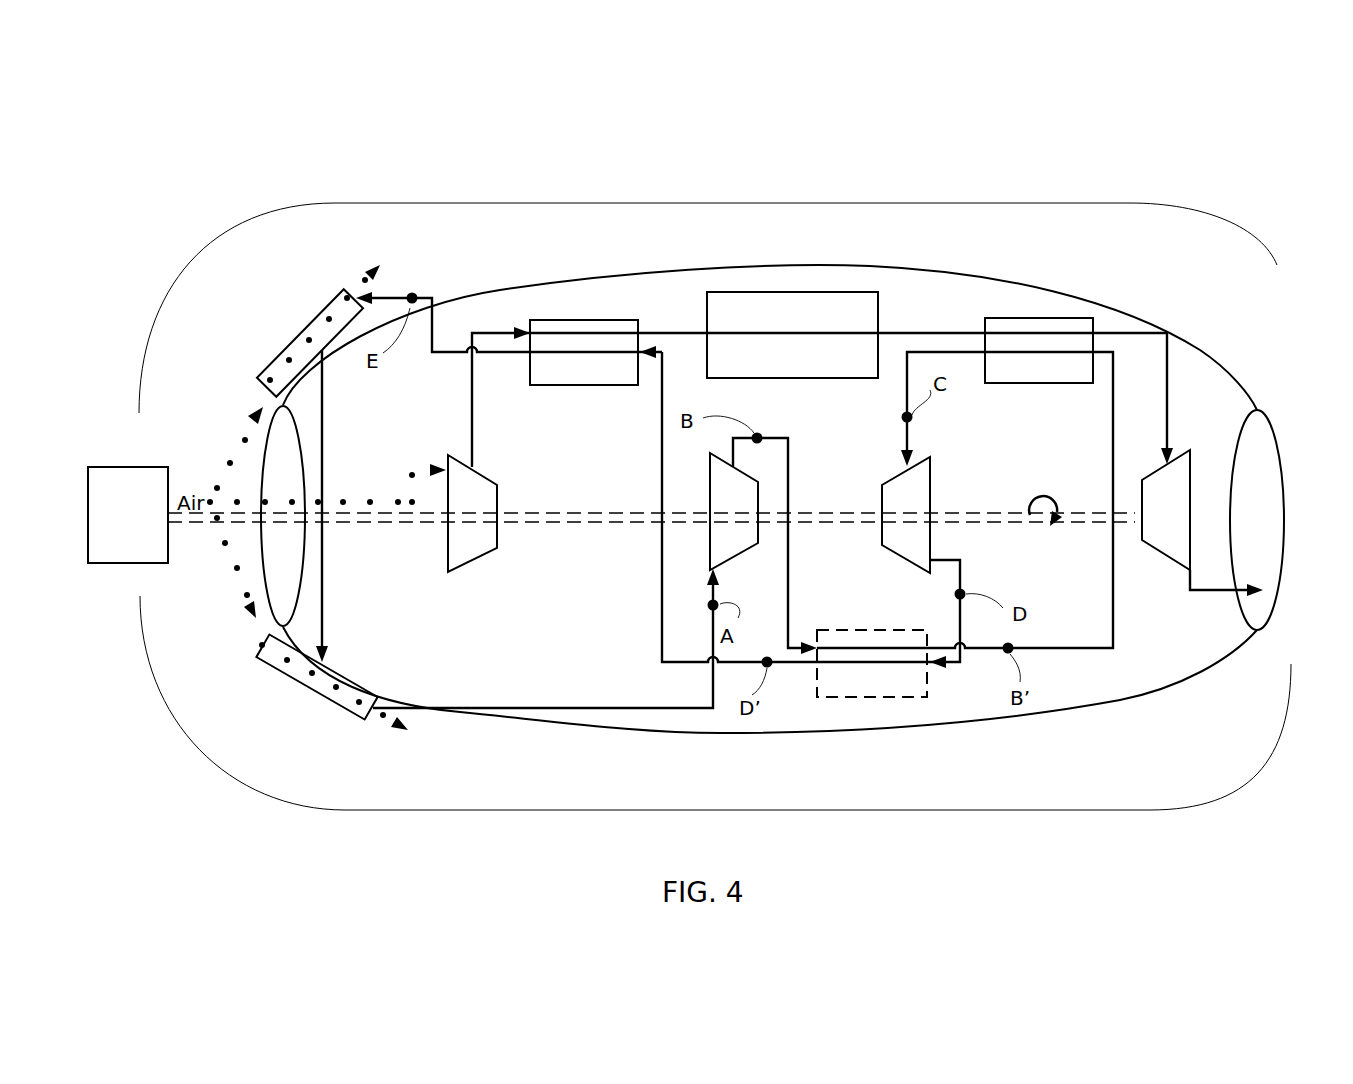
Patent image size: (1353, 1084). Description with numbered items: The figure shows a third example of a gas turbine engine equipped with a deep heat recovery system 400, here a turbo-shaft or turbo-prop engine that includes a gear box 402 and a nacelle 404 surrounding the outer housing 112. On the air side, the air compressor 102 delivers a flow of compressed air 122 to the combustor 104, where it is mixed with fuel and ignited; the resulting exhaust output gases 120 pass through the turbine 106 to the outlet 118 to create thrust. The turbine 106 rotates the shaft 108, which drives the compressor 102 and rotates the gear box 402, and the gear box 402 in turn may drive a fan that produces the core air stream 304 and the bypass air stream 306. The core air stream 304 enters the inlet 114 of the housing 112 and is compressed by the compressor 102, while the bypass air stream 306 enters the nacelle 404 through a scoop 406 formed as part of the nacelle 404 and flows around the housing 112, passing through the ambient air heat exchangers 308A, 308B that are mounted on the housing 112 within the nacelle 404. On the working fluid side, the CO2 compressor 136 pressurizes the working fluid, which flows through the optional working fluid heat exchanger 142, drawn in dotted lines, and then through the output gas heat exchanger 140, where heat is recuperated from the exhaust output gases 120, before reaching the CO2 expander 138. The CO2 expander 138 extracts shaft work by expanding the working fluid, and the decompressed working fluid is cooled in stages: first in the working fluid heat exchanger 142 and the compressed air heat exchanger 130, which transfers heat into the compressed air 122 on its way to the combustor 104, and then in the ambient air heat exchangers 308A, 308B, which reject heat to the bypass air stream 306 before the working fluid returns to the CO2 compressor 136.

The deep heat recovery system 400 is at (232, 128).
The gear box 402 is at (87, 517).
The nacelle 404 is at (648, 203).
The scoop 406 is at (112, 628).
The air compressor 102 is at (472, 562).
The combustor 104 is at (800, 292).
The turbine 106 is at (1193, 448).
The shaft 108 is at (604, 524).
The outer housing 112 is at (563, 728).
The inlet 114 is at (296, 458).
The outlet 118 is at (1272, 455).
The exhaust output gases 120 is at (938, 333).
The compressed air 122 is at (493, 330).
The compressed air heat exchanger 130 is at (583, 320).
The CO2 compressor 136 is at (708, 545).
The CO2 expander 138 is at (890, 478).
The output gas heat exchanger 140 is at (1038, 318).
The working fluid heat exchanger 142 is at (872, 630).
The core air stream 304 is at (378, 470).
The bypass air stream 306 is at (215, 568).
The ambient air heat exchanger 308A is at (343, 288).
The ambient air heat exchanger 308B is at (337, 712).